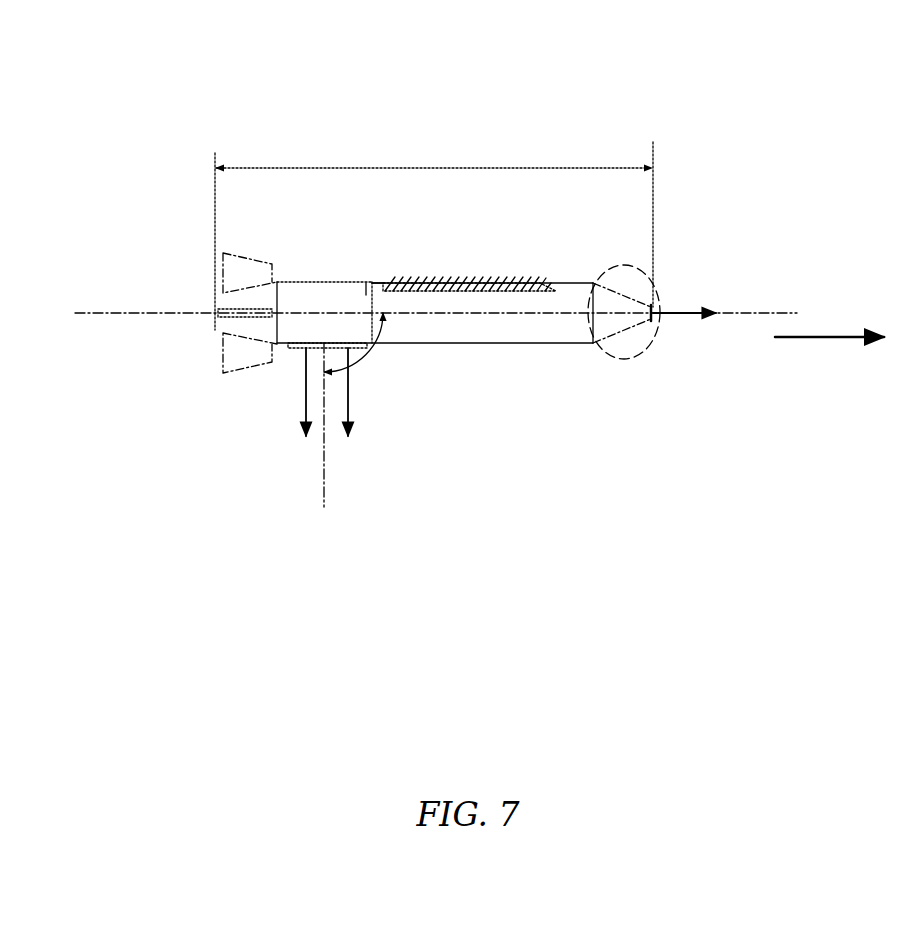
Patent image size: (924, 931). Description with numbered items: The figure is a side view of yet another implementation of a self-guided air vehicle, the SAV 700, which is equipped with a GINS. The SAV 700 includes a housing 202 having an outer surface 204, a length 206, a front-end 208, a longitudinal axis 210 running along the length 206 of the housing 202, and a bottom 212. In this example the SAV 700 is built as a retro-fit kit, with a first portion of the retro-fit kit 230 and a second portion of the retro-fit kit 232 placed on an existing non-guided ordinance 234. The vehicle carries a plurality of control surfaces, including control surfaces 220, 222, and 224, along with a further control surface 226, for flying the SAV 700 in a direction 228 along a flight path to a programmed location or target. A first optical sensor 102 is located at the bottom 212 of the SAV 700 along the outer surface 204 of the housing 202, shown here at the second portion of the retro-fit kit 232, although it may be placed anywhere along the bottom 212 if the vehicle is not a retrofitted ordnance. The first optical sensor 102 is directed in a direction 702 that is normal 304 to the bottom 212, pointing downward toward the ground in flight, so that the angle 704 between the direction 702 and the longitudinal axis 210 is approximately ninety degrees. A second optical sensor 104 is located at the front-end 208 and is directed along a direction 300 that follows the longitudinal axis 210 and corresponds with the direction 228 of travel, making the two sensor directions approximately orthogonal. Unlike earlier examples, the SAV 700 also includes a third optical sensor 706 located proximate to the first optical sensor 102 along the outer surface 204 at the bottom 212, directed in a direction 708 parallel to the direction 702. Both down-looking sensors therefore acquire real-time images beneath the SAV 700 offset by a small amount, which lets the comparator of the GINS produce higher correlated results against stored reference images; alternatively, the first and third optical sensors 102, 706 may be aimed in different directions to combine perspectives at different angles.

The SAV 700 is at (793, 138).
The length 206 is at (384, 167).
The longitudinal axis 210 is at (167, 311).
The normal 304 is at (327, 454).
The third optical sensor 706 is at (355, 350).
The outer surface 204 is at (435, 312).
The housing 202 is at (368, 292).
The second portion of the retro-fit kit 232 is at (327, 282).
The control surface 222 is at (247, 262).
The lower fin 226 is at (230, 360).
The control surface 224 is at (230, 316).
The control surface 220 is at (455, 282).
The first portion of the retro-fit kit 230 is at (537, 282).
The existing non-guided ordinance 234 is at (480, 333).
The bottom 212 is at (423, 341).
The first optical sensor 102 is at (292, 350).
The direction 702 is at (302, 414).
The direction 708 is at (352, 416).
The angle 704 is at (382, 348).
The front-end 208 is at (612, 354).
The second optical sensor 104 is at (655, 318).
The direction 300 is at (684, 310).
The direction 228 is at (845, 341).